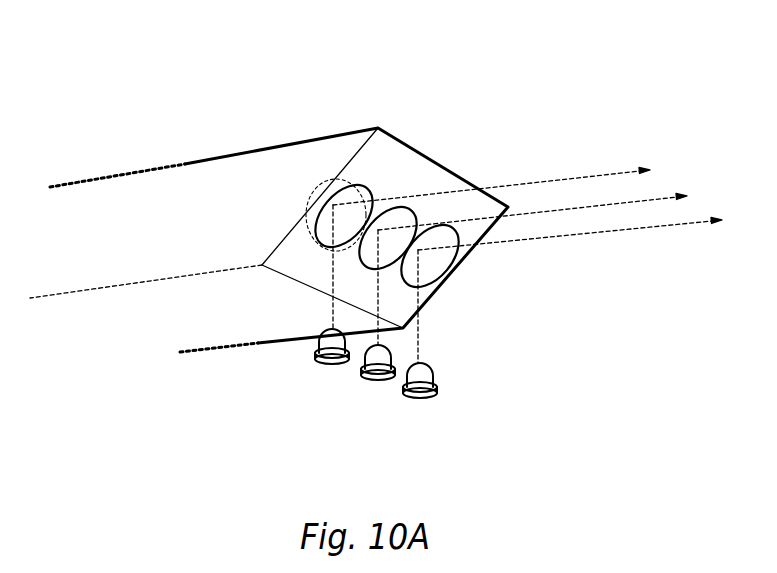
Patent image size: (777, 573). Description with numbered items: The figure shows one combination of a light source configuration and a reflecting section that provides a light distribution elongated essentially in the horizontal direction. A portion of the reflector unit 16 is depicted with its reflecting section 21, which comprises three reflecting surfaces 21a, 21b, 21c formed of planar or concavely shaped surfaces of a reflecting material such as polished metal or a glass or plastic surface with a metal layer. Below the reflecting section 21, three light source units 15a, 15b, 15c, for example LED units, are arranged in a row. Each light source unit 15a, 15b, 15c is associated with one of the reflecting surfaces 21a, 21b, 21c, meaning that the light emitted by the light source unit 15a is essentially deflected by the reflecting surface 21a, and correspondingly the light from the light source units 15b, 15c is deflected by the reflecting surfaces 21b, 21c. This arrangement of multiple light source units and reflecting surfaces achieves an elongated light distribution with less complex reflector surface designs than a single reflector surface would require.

The reflector unit 16 is at (257, 148).
The reflecting section 21 is at (527, 207).
The reflecting surface 21a is at (348, 203).
The reflecting surface 21b is at (397, 223).
The reflecting surface 21c is at (442, 243).
The light source unit 15a is at (331, 345).
The light source unit 15b is at (376, 360).
The light source unit 15c is at (430, 380).